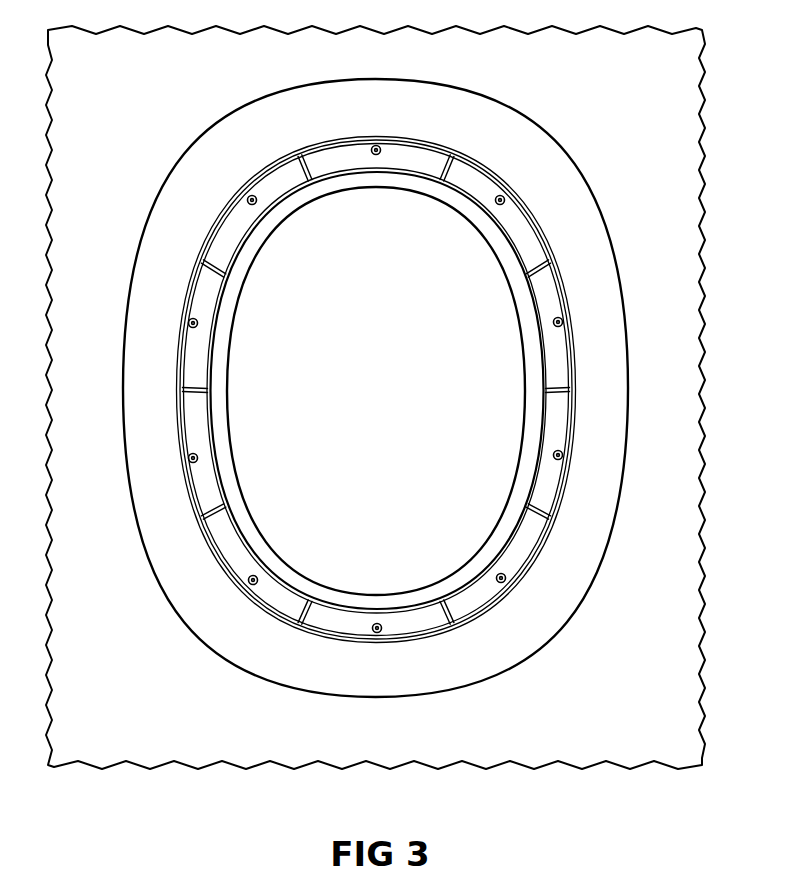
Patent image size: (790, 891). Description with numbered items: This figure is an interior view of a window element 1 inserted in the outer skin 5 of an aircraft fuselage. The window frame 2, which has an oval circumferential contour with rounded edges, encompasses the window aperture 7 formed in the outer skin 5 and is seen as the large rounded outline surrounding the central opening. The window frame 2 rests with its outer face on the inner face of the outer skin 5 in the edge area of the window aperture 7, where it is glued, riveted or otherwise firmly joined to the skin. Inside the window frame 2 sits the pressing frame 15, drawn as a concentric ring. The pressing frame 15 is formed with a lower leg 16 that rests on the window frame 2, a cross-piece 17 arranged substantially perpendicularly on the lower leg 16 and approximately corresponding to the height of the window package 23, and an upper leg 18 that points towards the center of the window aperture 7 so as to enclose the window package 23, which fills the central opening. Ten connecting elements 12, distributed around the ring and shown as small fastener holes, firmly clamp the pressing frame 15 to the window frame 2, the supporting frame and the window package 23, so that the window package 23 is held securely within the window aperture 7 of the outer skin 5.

The window element 1 is at (609, 126).
The window frame 2 is at (243, 128).
The outer skin 5 is at (694, 192).
The window aperture 7 is at (586, 538).
The connecting elements 12 is at (379, 146).
The pressing frame 15 is at (551, 240).
The lower leg 16 is at (563, 416).
The cross-piece 17 is at (546, 357).
The upper leg 18 is at (534, 370).
The window package 23 is at (363, 401).